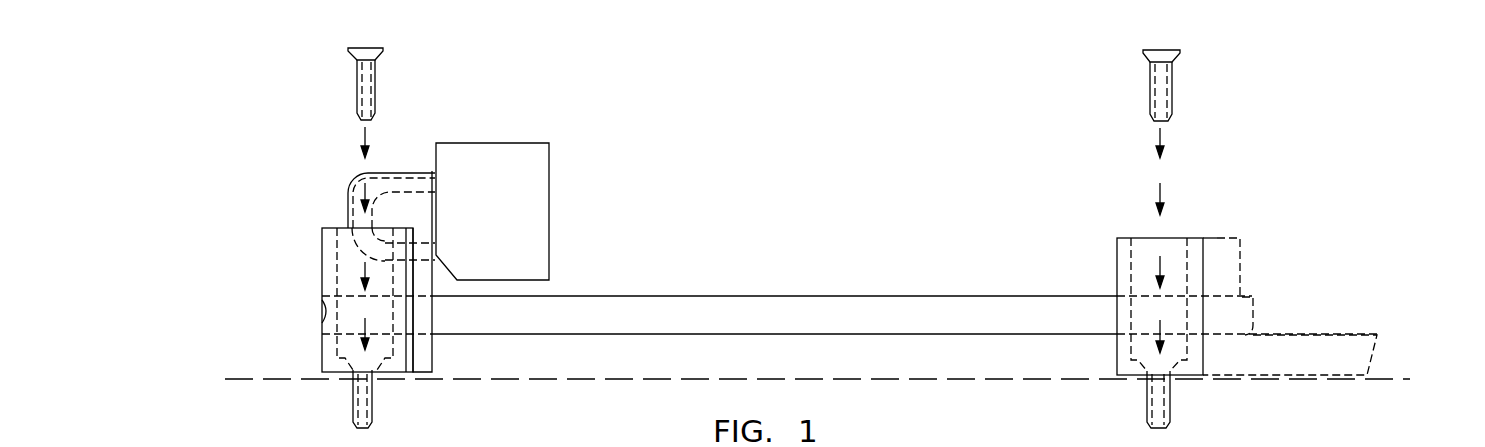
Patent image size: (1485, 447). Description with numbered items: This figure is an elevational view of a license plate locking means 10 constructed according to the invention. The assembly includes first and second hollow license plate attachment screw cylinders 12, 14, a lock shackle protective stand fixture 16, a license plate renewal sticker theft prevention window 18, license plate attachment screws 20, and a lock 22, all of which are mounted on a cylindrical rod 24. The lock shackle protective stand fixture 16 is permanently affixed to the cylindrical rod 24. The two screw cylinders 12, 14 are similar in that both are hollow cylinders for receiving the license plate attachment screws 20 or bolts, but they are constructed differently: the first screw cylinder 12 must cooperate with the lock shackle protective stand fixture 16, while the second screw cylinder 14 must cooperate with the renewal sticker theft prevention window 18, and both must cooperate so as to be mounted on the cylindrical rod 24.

The license plate locking means 10 is at (786, 236).
The first hollow license plate attachment screw cylinder 12 is at (327, 250).
The second hollow license plate attachment screw cylinder 14 is at (1126, 256).
The lock shackle protective stand fixture 16 is at (370, 178).
The license plate renewal sticker theft prevention window 18 is at (1225, 243).
The license plate attachment screws 20 is at (376, 80).
The lock 22 is at (515, 143).
The cylindrical rod 24 is at (838, 296).